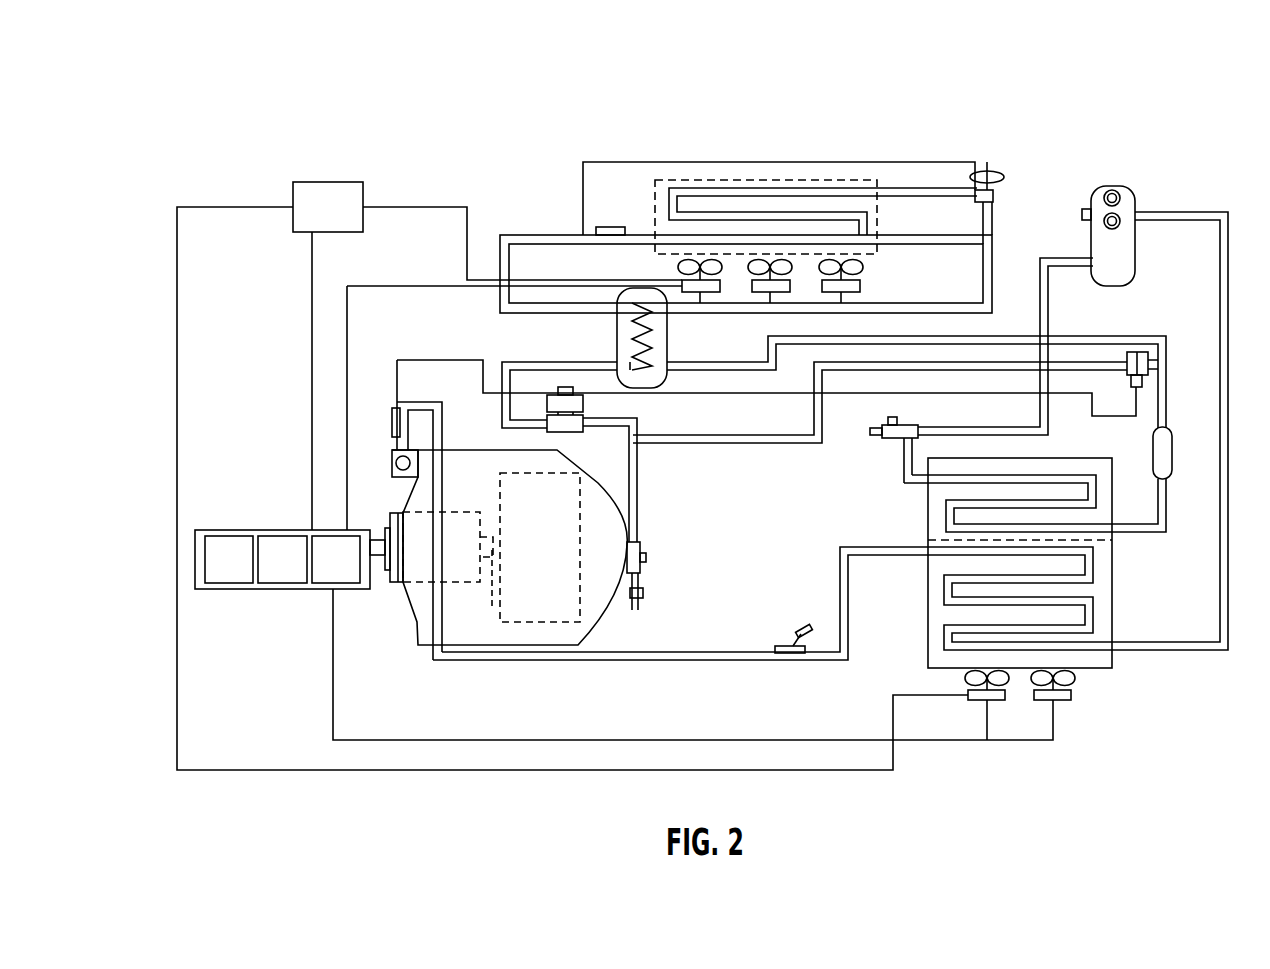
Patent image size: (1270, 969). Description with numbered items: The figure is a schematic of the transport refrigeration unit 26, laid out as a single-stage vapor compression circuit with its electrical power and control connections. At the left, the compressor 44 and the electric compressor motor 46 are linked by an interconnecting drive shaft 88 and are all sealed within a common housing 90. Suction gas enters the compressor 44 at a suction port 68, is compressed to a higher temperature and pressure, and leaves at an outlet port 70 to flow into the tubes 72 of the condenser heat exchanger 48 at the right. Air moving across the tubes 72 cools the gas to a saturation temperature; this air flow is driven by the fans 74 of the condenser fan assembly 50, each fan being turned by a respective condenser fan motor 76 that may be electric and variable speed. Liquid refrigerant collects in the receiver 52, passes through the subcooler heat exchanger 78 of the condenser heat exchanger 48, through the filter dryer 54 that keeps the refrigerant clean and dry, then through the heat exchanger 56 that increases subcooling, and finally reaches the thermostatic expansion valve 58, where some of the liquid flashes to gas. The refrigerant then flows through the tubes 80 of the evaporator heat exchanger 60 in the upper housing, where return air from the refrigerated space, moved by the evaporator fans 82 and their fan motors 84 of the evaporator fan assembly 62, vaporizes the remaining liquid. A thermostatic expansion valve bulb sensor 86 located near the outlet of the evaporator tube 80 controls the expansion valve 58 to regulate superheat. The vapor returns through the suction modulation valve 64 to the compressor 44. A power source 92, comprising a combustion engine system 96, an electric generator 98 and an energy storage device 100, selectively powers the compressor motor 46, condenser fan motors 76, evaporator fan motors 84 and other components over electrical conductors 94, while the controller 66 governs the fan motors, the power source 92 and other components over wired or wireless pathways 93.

The transport refrigeration unit 26 is at (1115, 95).
The compressor 44 is at (531, 541).
The electric compressor motor 46 is at (446, 561).
The condenser heat exchanger 48 is at (1116, 557).
The condenser fan assembly 50 is at (1018, 716).
The receiver 52 is at (1143, 240).
The filter dryer 54 is at (1172, 455).
The heat exchanger 56 is at (667, 325).
The thermostatic expansion valve 58 is at (1000, 195).
The evaporator heat exchanger 60 is at (798, 186).
The evaporator fan assembly 62 is at (942, 265).
The suction modulation valve 64 is at (562, 432).
The controller 66 is at (314, 221).
The suction port 68 is at (642, 548).
The outlet port 70 is at (395, 462).
The tubes 72 is at (1096, 608).
The condenser fans 74 is at (965, 680).
The condenser fan motors 76 is at (967, 697).
The subcooler heat exchanger 78 is at (928, 493).
The tubes 80 is at (662, 192).
The evaporator fans 82 is at (680, 268).
The fan motors 84 is at (860, 286).
The thermostatic expansion valve bulb sensor 86 is at (606, 226).
The interconnecting drive shaft 88 is at (492, 607).
The common housing 90 is at (588, 633).
The power source 92 is at (282, 527).
The pathways 93 is at (408, 207).
The electrical conductors 94 is at (348, 340).
The combustion engine system 96 is at (215, 574).
The electric generator 98 is at (269, 574).
The energy storage device 100 is at (318, 574).